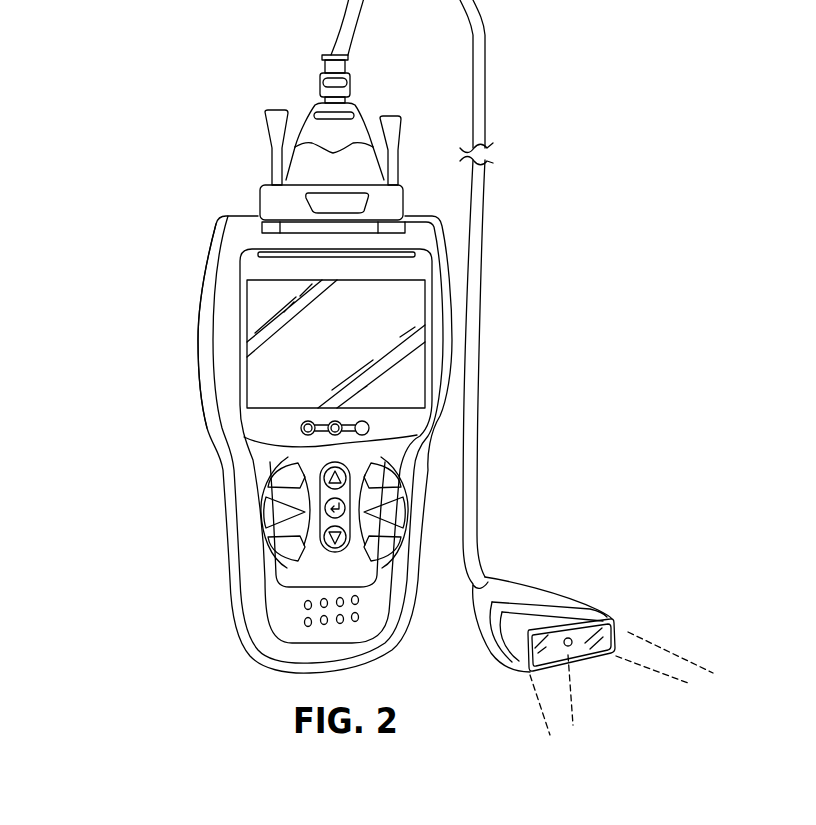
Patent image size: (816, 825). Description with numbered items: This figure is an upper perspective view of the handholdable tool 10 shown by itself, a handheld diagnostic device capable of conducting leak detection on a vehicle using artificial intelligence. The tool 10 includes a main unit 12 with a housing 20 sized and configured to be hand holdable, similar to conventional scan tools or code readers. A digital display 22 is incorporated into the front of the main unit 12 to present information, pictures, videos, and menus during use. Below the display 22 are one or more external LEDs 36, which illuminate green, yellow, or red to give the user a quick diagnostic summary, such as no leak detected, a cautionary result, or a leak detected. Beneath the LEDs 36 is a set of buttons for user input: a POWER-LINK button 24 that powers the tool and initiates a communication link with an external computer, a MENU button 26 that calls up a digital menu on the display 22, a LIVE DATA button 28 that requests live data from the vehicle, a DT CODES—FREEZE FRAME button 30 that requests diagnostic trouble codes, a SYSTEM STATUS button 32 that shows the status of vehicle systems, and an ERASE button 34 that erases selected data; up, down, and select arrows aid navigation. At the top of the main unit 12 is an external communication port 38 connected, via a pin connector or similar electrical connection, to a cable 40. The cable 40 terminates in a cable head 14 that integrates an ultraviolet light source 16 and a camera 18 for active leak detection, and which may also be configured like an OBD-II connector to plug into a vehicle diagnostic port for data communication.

The handholdable tool 10 is at (198, 176).
The main unit 12 is at (178, 381).
The cable head 14 is at (588, 578).
The ultraviolet light source 16 is at (607, 633).
The camera 18 is at (572, 646).
The housing 20 is at (198, 322).
The digital display 22 is at (315, 352).
The POWER-LINK button 24 is at (393, 478).
The MENU button 26 is at (378, 505).
The LIVE DATA button 28 is at (385, 528).
The DT CODES—FREEZE FRAME button 30 is at (283, 538).
The SYSTEM STATUS button 32 is at (287, 510).
The ERASE button 34 is at (275, 483).
The external LEDs 36 is at (287, 428).
The external communication port 38 is at (302, 228).
The cable 40 is at (485, 213).